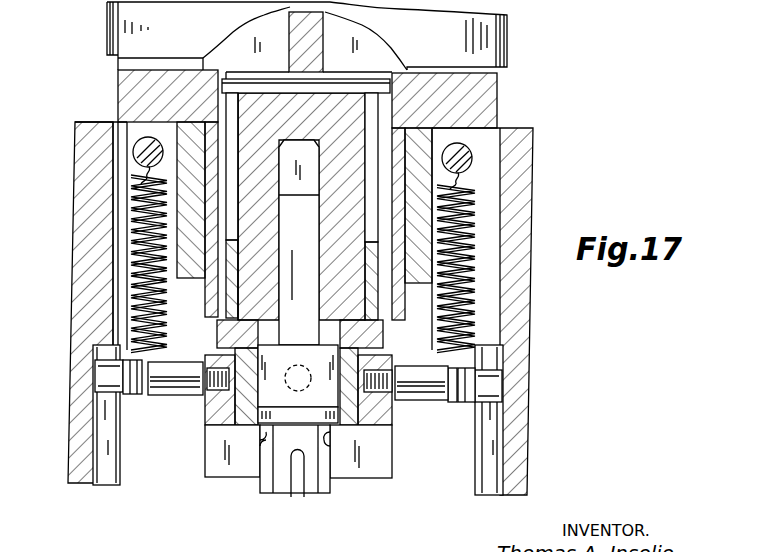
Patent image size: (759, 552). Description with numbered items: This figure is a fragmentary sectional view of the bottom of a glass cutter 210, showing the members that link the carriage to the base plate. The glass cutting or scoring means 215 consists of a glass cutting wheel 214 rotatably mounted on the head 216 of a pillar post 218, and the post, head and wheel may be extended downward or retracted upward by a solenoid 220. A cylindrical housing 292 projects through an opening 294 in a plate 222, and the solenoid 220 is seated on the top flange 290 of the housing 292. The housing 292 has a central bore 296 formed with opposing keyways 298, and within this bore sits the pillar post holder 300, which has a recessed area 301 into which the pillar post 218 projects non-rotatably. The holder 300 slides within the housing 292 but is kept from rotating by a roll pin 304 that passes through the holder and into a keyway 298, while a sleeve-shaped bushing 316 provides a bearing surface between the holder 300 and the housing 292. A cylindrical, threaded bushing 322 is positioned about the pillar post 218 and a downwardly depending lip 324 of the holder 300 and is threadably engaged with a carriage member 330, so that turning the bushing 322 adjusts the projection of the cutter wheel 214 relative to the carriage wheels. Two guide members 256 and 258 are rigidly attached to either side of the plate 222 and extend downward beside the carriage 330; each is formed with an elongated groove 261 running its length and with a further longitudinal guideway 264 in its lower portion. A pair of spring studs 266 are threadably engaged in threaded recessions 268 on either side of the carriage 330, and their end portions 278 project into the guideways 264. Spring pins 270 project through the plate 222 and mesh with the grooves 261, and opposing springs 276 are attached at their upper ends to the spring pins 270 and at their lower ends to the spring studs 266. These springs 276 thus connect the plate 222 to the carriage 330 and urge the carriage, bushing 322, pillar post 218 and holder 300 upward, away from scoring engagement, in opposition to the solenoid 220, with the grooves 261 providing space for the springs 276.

The glass cutter 210 is at (548, 93).
The glass cutting wheel 214 is at (303, 500).
The glass cutting or scoring means 215 is at (341, 501).
The head 216 is at (277, 480).
The pillar post 218 is at (292, 322).
The solenoid 220 is at (508, 33).
The plate 222 is at (425, 190).
The guide member 256 is at (534, 137).
The guide member 258 is at (73, 146).
The elongated grooves 261 is at (125, 305).
The longitudinal guideways 264 is at (100, 472).
The spring studs 266 is at (175, 398).
The threaded recessions 268 is at (397, 384).
The spring pins 270 is at (472, 158).
The springs 276 is at (130, 232).
The end portions 278 is at (98, 377).
The top flange 290 is at (118, 76).
The cylindrical housing 292 is at (207, 143).
The opening 294 is at (190, 187).
The central bore 296 is at (228, 213).
The keyways 298 is at (222, 98).
The pillar post holder 300 is at (238, 270).
The recessed area 301 is at (319, 160).
The roll pin 304 is at (360, 85).
The sleeve-shaped bushing 316 is at (232, 290).
The cylindrical bushing 322 is at (207, 410).
The downwardly depending lip 324 is at (380, 333).
The carriage member 330 is at (372, 427).